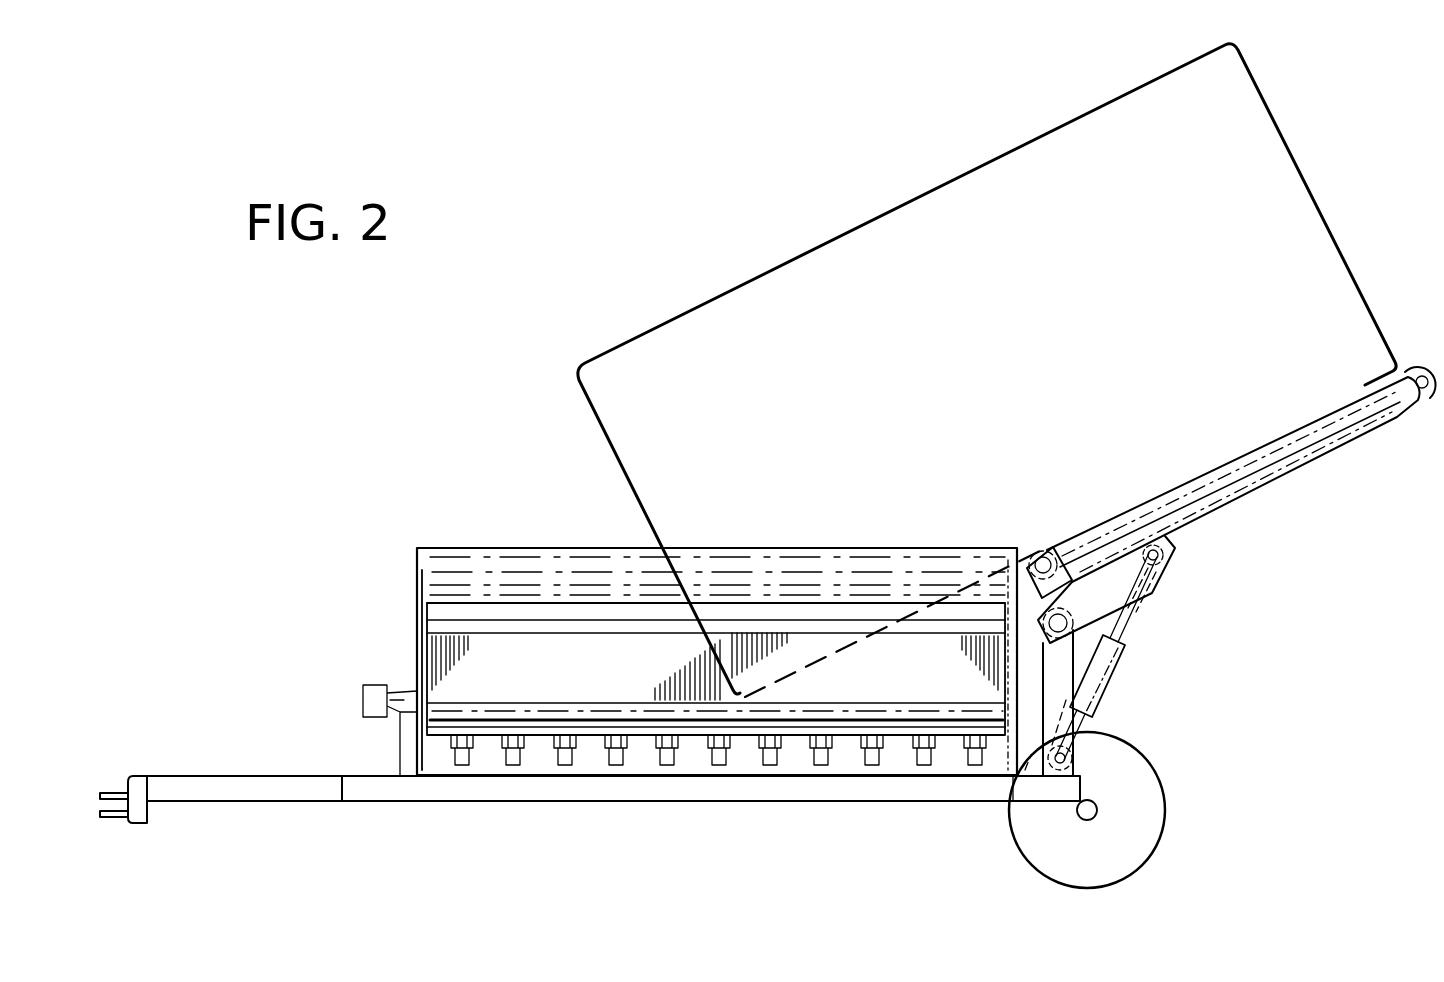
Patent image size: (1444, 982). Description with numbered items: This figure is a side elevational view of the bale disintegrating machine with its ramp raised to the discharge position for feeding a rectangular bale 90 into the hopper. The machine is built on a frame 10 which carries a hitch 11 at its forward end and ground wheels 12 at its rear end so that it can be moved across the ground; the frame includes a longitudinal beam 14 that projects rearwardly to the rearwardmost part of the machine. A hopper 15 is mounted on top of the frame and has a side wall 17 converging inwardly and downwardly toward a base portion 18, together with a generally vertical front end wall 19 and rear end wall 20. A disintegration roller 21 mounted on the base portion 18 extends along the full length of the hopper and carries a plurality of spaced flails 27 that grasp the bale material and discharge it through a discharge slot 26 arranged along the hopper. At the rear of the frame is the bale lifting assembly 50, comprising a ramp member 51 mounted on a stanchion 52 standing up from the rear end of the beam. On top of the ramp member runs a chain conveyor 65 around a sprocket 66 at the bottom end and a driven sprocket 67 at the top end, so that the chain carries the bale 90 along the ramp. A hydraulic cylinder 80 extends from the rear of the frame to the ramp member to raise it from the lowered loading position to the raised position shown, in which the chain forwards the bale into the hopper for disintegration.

The frame 10 is at (283, 763).
The hitch 11 is at (103, 788).
The ground wheels 12 is at (1165, 800).
The beam 14 is at (830, 790).
The hopper 15 is at (530, 533).
The side wall 17 is at (807, 568).
The base portion 18 is at (483, 778).
The front end wall 19 is at (416, 628).
The rear end wall 20 is at (1022, 640).
The disintegration roller 21 is at (538, 718).
The discharge slot 26 is at (590, 760).
The flails 27 is at (712, 757).
The bale lifting assembly 50 is at (1220, 551).
The ramp member 51 is at (1290, 476).
The stanchion 52 is at (1080, 708).
The chain conveyor 65 is at (1235, 455).
The sprocket 66 is at (1432, 366).
The sprocket 67 is at (1043, 548).
The hydraulic cylinder 80 is at (1120, 655).
The bale 90 is at (888, 208).